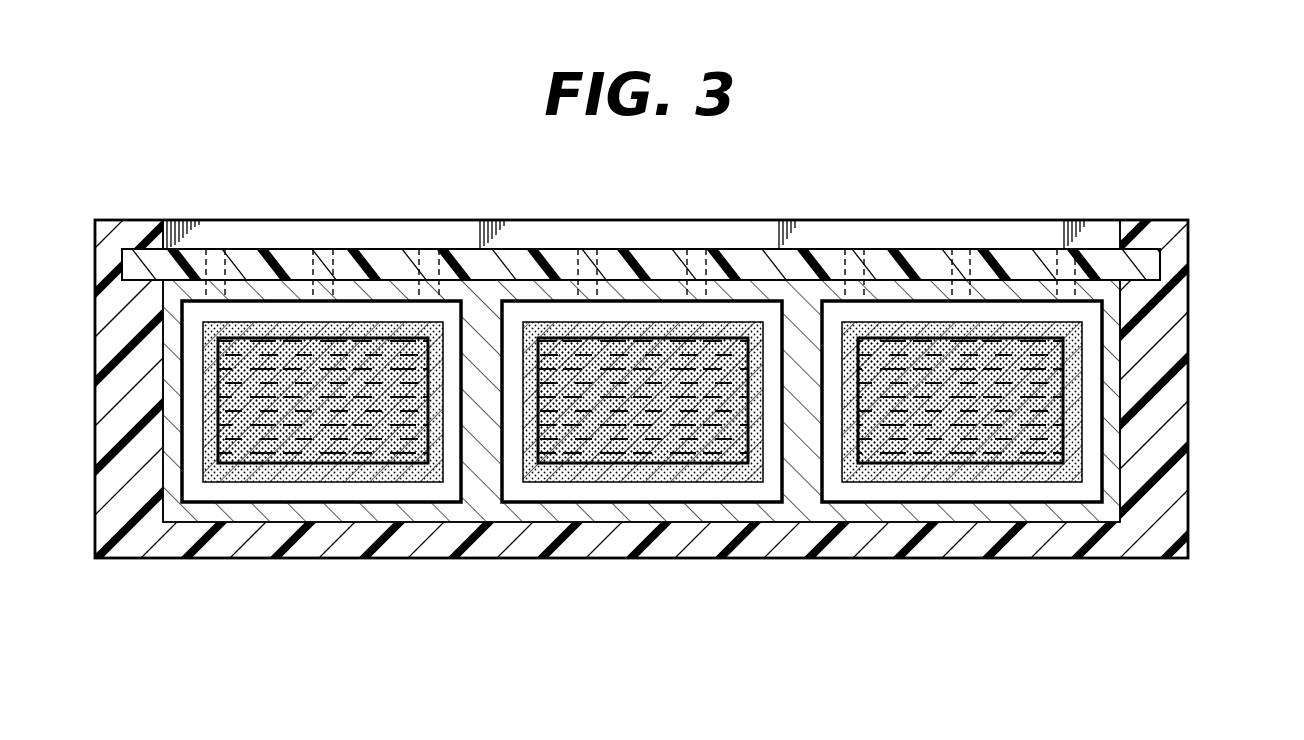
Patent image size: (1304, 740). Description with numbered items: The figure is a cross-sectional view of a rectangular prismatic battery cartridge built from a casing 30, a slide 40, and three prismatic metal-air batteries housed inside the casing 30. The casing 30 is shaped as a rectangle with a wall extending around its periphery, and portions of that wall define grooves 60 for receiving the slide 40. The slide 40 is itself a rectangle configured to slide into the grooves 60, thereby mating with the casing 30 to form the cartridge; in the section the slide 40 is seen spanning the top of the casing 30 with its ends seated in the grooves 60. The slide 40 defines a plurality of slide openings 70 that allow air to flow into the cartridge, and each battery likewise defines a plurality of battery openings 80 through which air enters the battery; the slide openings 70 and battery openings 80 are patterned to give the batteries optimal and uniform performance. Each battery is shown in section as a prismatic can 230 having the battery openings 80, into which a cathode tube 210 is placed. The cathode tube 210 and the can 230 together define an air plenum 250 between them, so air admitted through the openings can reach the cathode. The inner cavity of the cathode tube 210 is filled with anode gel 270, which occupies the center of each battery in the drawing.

The casing 30 is at (1190, 387).
The slide 40 is at (187, 248).
The grooves 60 is at (1156, 262).
The slide openings 70 is at (1050, 258).
The battery openings 80 is at (720, 282).
The cathode tube 210 is at (205, 368).
The can 230 is at (172, 460).
The air plenum 250 is at (268, 492).
The anode gel 270 is at (228, 350).